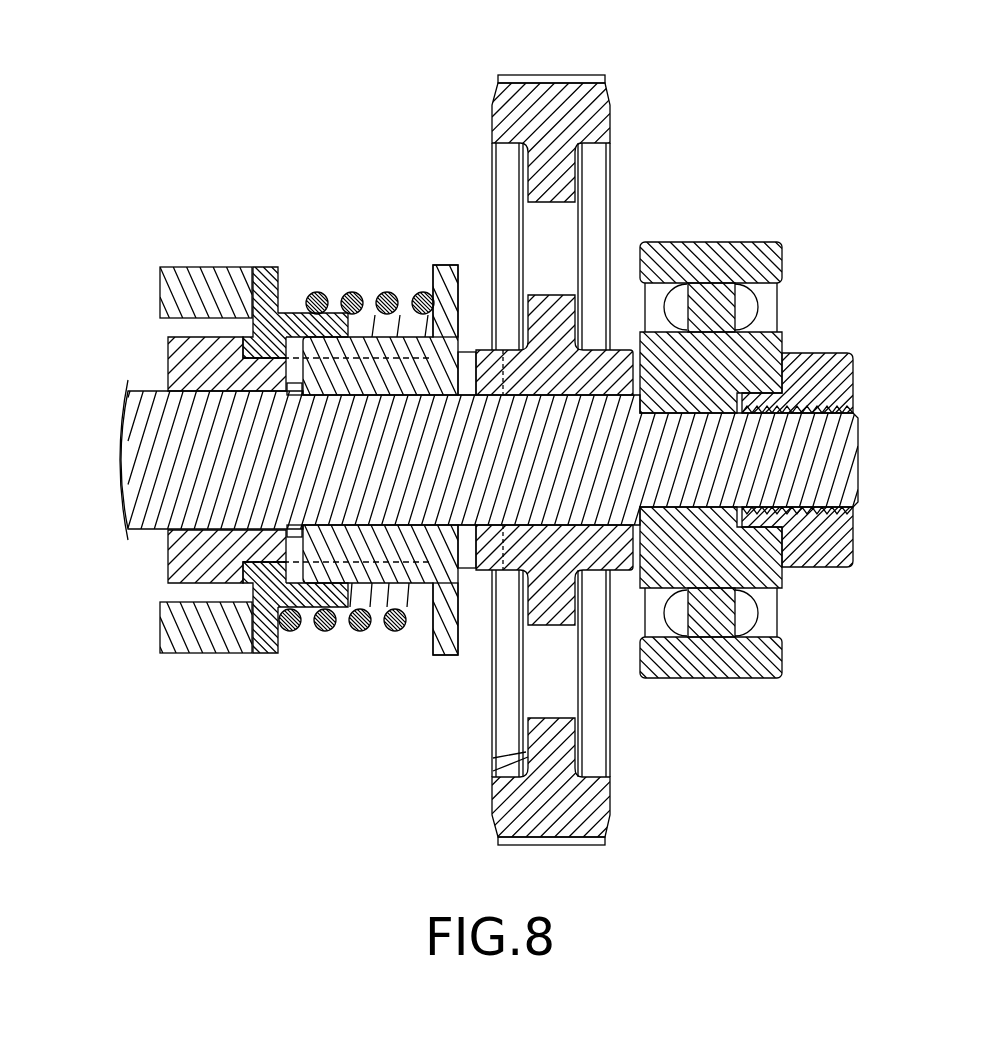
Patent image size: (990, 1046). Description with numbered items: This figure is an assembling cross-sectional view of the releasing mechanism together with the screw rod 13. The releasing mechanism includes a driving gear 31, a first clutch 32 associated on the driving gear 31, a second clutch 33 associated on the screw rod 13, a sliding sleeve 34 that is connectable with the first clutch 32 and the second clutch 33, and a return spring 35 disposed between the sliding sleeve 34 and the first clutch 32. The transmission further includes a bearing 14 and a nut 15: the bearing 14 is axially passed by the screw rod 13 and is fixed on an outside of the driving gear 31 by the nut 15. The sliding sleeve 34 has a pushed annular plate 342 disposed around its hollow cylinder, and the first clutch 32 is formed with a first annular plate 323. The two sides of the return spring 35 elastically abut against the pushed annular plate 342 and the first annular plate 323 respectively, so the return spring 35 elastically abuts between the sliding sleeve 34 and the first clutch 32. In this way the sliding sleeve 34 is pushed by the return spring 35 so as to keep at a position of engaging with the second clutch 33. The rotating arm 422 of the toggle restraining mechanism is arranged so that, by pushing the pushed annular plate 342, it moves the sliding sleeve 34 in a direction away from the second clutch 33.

The screw rod 13 is at (837, 459).
The bearing 14 is at (710, 257).
The nut 15 is at (823, 355).
The driving gear 31 is at (563, 92).
The first clutch 32 is at (402, 337).
The first annular plate 323 is at (447, 265).
The second clutch 33 is at (227, 357).
The sliding sleeve 34 is at (292, 313).
The pushed annular plate 342 is at (265, 268).
The return spring 35 is at (350, 293).
The rotating arm 422 is at (203, 283).